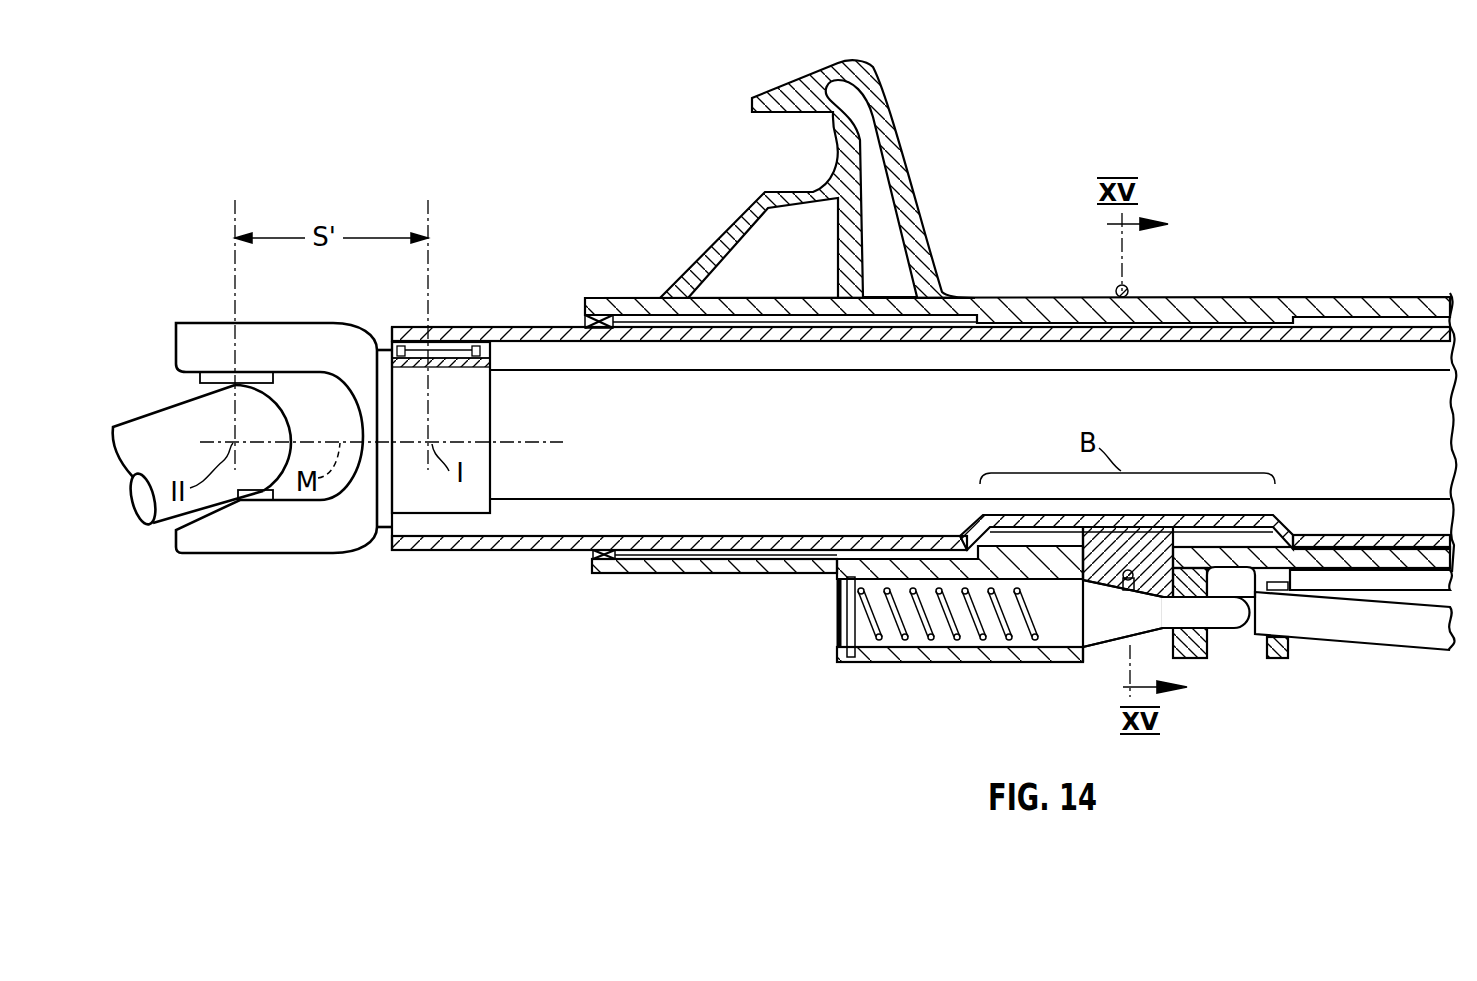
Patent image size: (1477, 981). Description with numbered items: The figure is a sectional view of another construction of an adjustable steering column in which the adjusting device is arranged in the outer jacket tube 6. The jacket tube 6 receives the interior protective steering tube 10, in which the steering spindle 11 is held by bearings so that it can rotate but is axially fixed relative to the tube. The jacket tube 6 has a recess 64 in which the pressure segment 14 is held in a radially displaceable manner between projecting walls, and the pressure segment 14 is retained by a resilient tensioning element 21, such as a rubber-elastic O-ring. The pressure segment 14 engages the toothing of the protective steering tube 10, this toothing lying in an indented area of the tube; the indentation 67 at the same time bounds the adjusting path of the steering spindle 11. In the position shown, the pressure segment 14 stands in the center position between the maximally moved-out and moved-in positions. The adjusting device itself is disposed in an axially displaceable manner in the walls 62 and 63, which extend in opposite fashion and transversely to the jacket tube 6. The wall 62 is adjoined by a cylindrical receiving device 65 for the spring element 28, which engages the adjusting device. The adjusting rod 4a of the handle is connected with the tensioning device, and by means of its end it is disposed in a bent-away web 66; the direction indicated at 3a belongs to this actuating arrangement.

The protective steering tube 10 is at (548, 548).
The steering spindle 11 is at (779, 433).
The jacket tube 6 is at (693, 567).
The resilient tensioning element 21 is at (1130, 288).
The indentation 67 is at (978, 524).
The pressure segment 14 is at (1163, 537).
The recess 64 is at (1162, 647).
The wall 62 is at (1057, 568).
The stop surface 3a is at (1108, 668).
The wall 63 is at (1200, 655).
The bent-away web 66 is at (1290, 658).
The adjusting rod 4a is at (1373, 630).
The cylindrical receiving device 65 is at (862, 682).
The spring element 28 is at (963, 636).